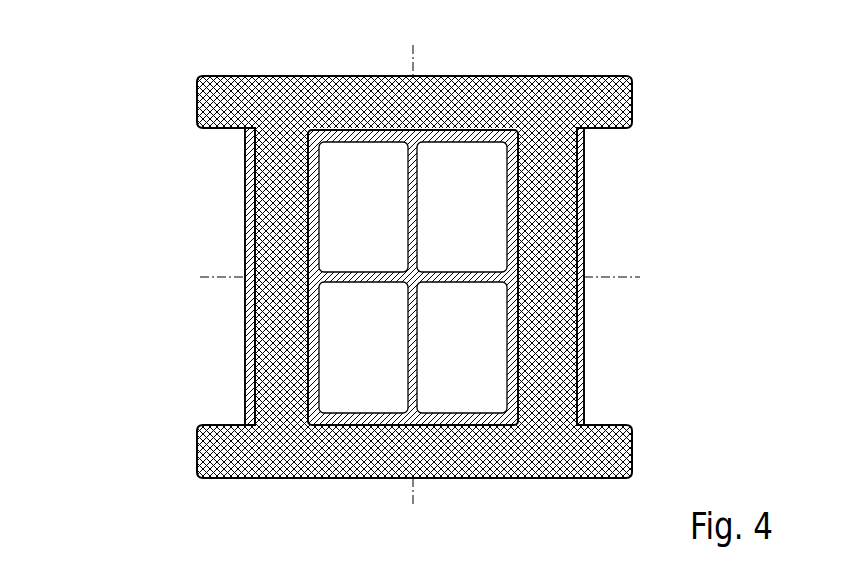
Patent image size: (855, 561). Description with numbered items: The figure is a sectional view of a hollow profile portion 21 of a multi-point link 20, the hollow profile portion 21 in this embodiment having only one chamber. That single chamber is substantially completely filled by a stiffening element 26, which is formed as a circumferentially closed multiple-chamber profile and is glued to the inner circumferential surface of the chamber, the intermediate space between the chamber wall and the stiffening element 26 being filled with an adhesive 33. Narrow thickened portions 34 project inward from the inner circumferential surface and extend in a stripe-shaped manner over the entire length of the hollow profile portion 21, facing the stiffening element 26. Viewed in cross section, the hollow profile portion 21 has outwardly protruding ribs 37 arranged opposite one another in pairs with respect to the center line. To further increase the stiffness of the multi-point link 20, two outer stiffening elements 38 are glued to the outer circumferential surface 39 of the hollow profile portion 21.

The multi-point link 20 is at (166, 224).
The hollow profile portion 21 is at (188, 107).
The stiffening element 26 is at (510, 172).
The adhesive 33 is at (305, 342).
The thickened portion 34 is at (241, 184).
The rib 37 is at (215, 455).
The outer stiffening element 38 is at (245, 296).
The outer circumferential surface 39 is at (458, 73).